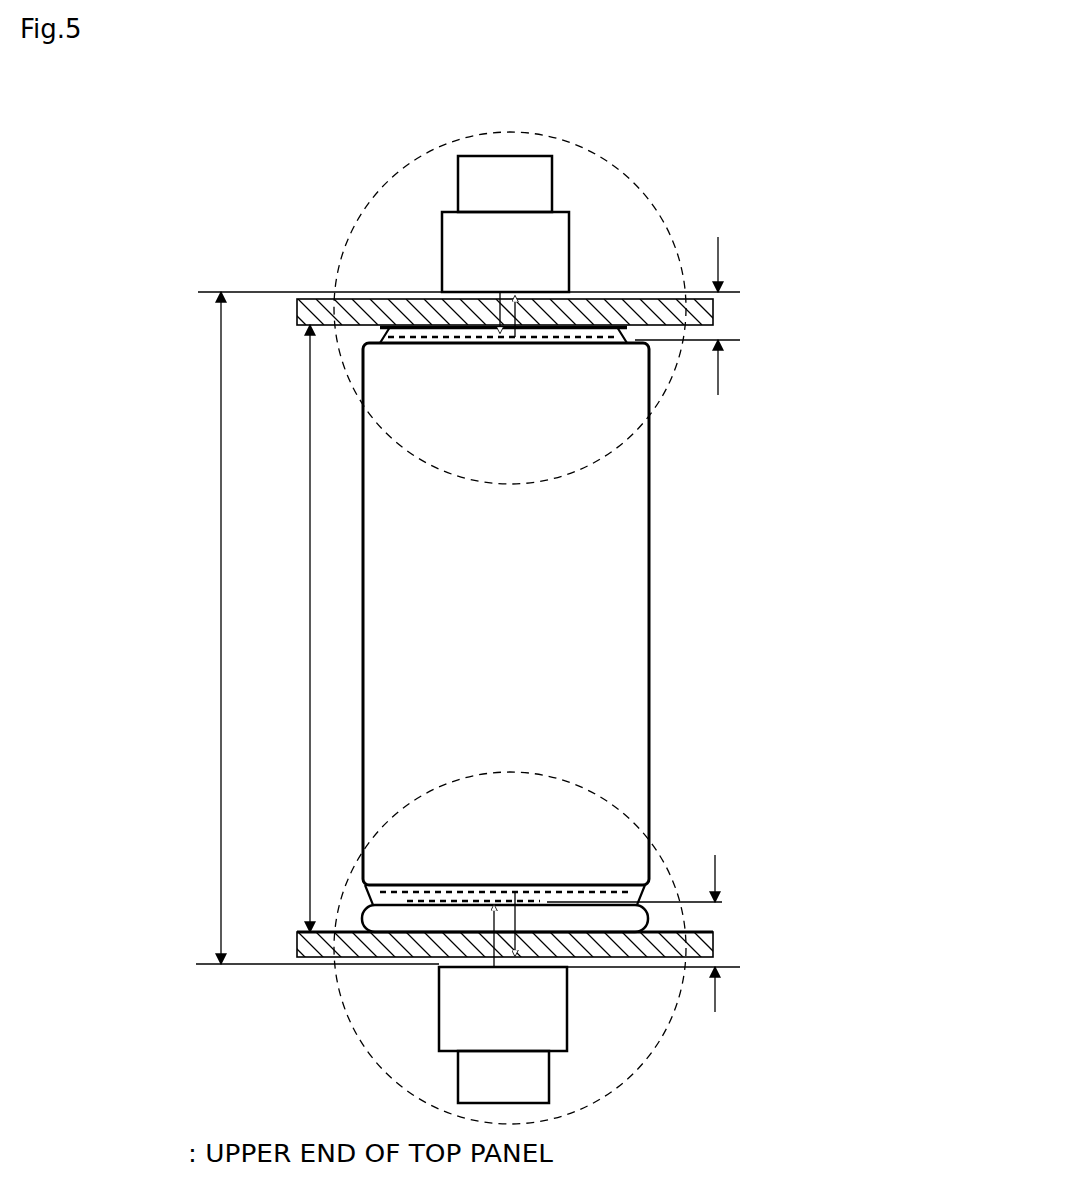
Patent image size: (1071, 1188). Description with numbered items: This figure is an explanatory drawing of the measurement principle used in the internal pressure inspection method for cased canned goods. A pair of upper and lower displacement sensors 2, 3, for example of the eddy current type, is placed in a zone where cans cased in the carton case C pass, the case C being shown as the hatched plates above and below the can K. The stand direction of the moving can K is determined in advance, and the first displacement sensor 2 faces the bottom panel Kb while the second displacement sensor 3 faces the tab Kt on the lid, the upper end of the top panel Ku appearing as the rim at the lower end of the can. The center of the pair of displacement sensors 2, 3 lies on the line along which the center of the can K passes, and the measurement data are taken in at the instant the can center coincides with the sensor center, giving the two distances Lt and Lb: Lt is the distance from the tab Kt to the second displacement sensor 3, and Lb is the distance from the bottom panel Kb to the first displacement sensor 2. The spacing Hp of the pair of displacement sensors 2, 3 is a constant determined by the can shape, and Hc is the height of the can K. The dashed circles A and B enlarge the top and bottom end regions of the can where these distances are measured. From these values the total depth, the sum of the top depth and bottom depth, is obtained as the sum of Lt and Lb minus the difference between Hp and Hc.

The first displacement sensor 2 is at (552, 184).
The second displacement sensor 3 is at (549, 1065).
The can K is at (649, 692).
The bottom panel Kb is at (602, 337).
The tab Kt is at (532, 901).
The upper end of top panel Ku is at (443, 932).
The carton case C is at (355, 305).
The region A is at (488, 468).
The region B is at (496, 810).
The spacing of the pair of displacement sensors Hp is at (198, 628).
The height of the can Hc is at (289, 628).
The distance from the bottom panel to the first displacement sensor Lb is at (694, 317).
The distance from the tab to the second displacement sensor Lt is at (635, 920).